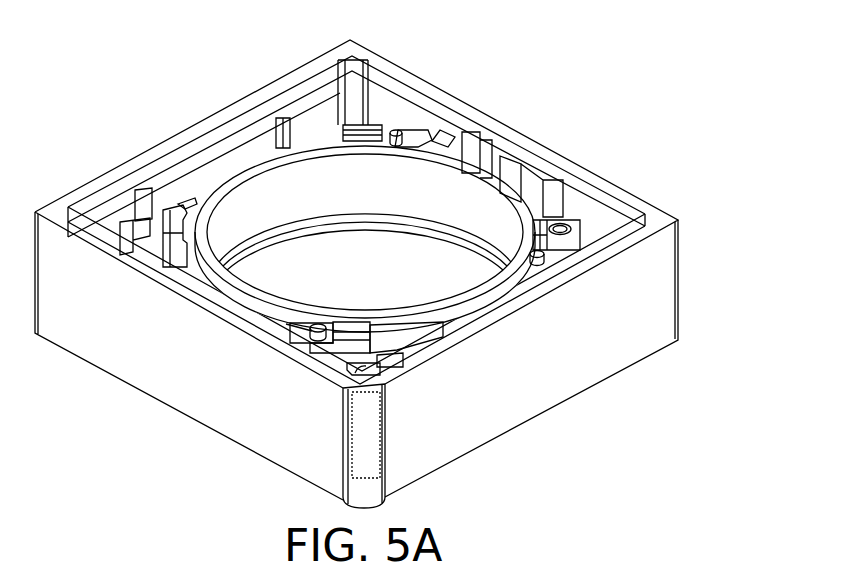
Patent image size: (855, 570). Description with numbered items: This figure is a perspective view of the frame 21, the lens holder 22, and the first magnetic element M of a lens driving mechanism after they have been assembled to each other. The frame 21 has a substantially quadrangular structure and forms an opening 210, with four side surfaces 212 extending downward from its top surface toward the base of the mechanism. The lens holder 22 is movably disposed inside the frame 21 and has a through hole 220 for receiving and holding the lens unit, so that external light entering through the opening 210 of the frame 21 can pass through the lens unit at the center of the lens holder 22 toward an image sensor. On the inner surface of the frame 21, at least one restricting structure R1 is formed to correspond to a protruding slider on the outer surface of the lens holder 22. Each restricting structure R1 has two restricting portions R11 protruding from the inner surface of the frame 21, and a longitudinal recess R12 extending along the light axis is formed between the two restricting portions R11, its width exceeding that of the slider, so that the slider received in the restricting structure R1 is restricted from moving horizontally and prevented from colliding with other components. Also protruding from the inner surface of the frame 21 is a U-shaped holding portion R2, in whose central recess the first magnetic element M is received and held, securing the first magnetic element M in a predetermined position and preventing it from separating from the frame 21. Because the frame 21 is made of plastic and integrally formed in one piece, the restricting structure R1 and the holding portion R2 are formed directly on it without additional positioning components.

The frame 21 is at (77, 189).
The side surfaces 212 is at (304, 64).
The opening 210 is at (313, 292).
The through hole 220 is at (258, 199).
The lens holder 22 is at (413, 129).
The restricting structure R1 is at (549, 113).
The restricting portions R11 is at (467, 153).
The recess R12 is at (502, 160).
The holding portion R2 is at (124, 214).
The first magnetic element M is at (170, 207).